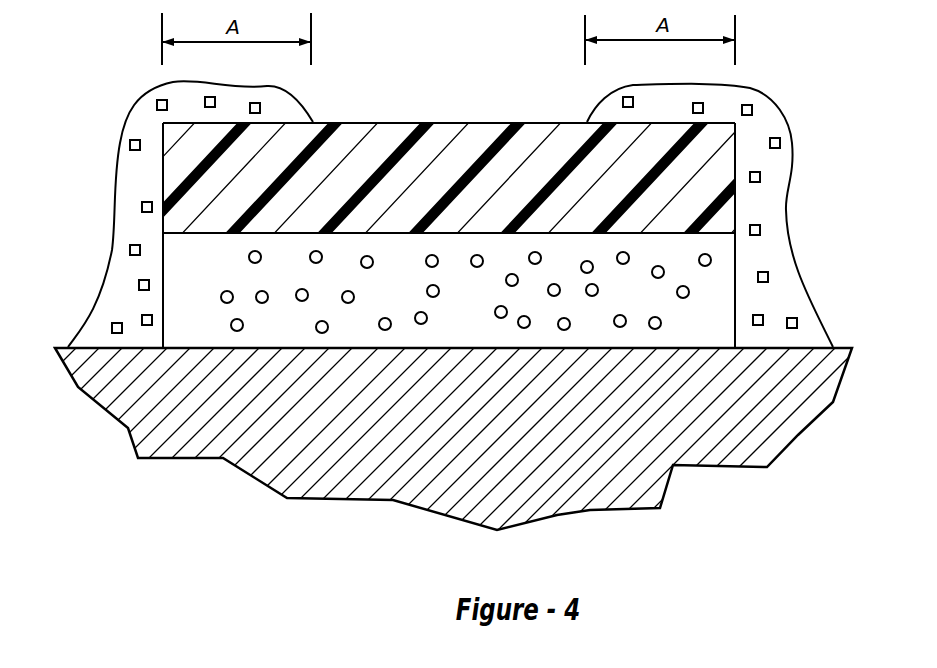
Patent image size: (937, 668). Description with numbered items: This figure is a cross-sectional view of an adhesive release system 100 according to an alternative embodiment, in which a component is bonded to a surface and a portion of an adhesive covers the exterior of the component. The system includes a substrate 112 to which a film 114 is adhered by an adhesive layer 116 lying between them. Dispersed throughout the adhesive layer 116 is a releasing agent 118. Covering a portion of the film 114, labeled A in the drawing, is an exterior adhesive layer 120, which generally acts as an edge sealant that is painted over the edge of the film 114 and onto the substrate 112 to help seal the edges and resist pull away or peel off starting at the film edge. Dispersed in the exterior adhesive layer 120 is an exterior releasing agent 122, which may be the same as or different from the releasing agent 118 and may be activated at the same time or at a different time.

The adhesive release system 100 is at (103, 120).
The substrate 112 is at (240, 405).
The film 114 is at (345, 143).
The adhesive layer 116 is at (157, 270).
The releasing agent 118 is at (712, 260).
The exterior adhesive layer 120 is at (765, 118).
The exterior releasing agent 122 is at (117, 328).